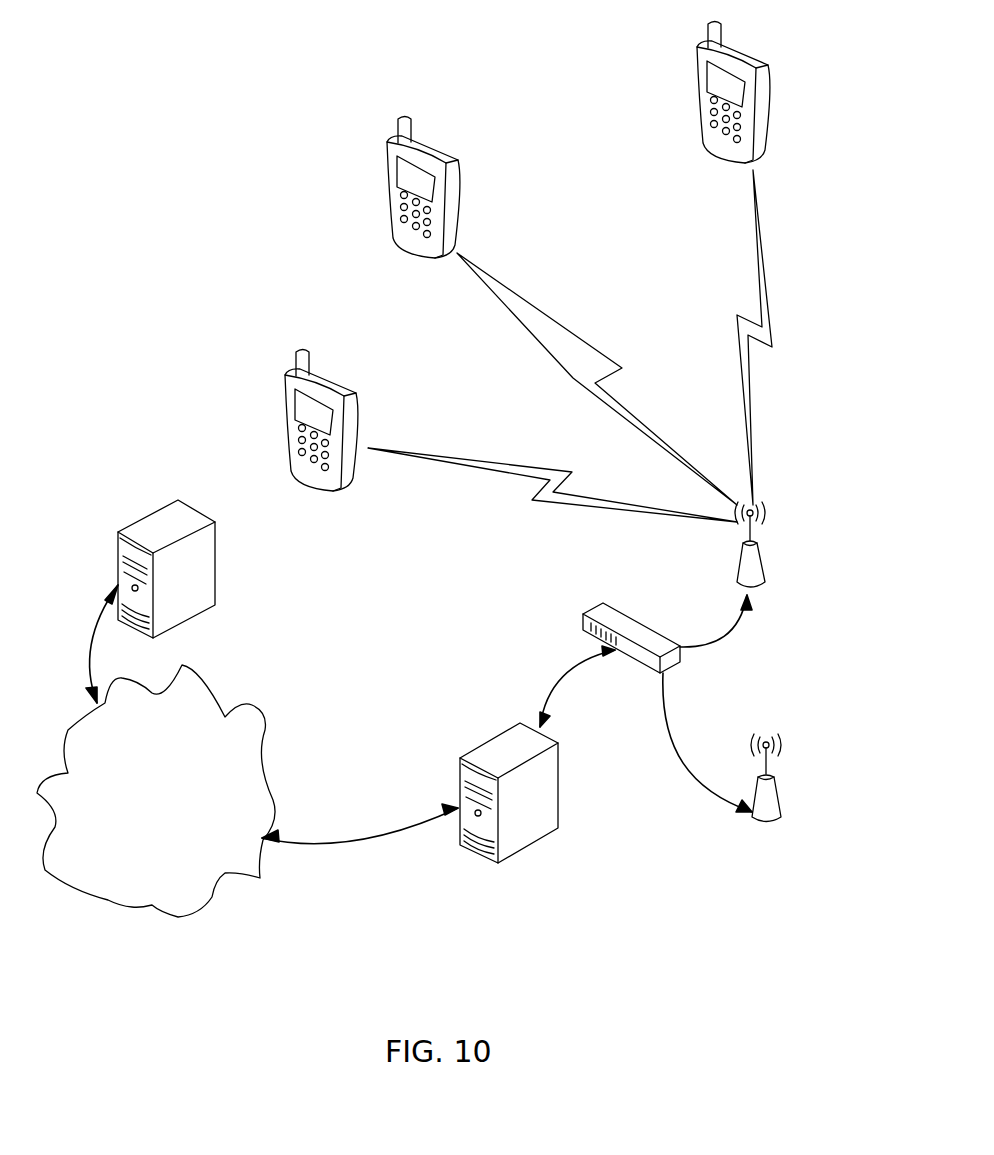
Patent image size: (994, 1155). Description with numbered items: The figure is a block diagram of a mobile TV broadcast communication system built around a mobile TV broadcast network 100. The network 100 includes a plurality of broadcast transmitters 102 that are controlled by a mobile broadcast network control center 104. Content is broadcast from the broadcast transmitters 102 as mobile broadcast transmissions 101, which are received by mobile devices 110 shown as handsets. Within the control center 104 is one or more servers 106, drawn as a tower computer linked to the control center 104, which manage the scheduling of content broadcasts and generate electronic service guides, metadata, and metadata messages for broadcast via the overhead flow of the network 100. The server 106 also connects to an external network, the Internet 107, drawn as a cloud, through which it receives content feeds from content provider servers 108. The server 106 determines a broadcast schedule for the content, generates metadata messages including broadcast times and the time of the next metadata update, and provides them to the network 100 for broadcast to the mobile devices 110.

The mobile TV broadcast network 100 is at (542, 648).
The mobile broadcast transmissions 101 is at (773, 317).
The broadcast transmitters 102 is at (756, 535).
The mobile broadcast network control center 104 is at (632, 623).
The server 106 is at (558, 784).
The Internet 107 is at (132, 907).
The content provider servers 108 is at (217, 562).
The mobile devices 110 is at (772, 90).